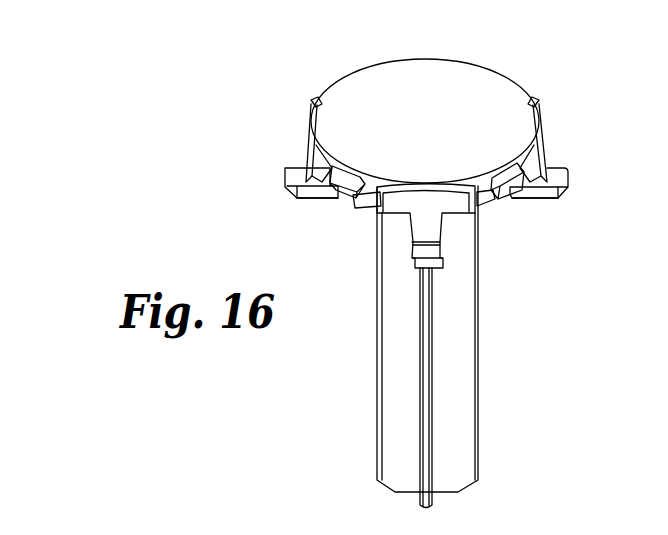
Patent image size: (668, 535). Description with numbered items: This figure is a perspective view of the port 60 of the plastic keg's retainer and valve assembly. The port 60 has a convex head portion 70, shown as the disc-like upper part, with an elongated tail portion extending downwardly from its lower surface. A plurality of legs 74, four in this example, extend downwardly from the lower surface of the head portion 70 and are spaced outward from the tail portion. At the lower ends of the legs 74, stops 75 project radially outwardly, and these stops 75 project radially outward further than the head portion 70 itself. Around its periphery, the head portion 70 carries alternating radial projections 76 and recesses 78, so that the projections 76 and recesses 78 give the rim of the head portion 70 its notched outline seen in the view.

The port 60 is at (566, 83).
The head portion 70 is at (431, 88).
The legs 74 is at (313, 192).
The stops 75 is at (292, 198).
The radial projections 76 is at (312, 180).
The recesses 78 is at (345, 186).